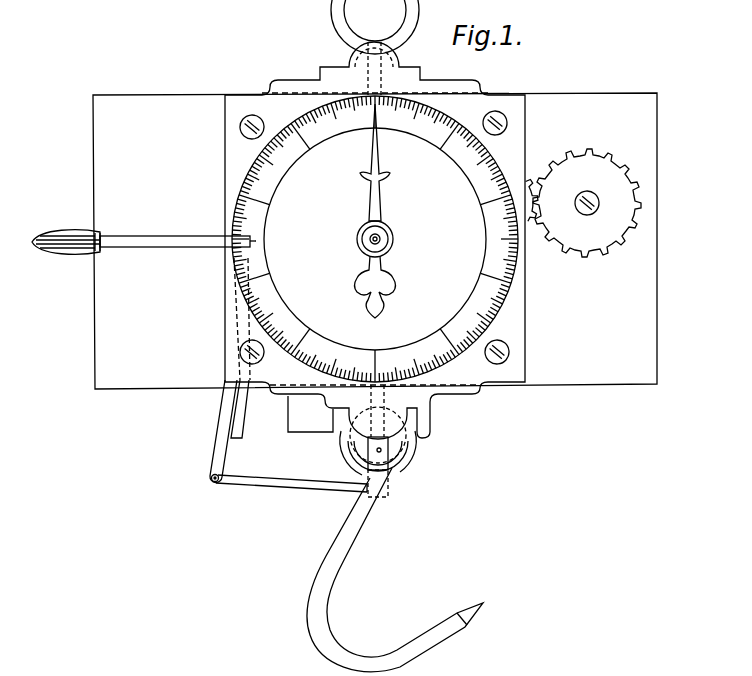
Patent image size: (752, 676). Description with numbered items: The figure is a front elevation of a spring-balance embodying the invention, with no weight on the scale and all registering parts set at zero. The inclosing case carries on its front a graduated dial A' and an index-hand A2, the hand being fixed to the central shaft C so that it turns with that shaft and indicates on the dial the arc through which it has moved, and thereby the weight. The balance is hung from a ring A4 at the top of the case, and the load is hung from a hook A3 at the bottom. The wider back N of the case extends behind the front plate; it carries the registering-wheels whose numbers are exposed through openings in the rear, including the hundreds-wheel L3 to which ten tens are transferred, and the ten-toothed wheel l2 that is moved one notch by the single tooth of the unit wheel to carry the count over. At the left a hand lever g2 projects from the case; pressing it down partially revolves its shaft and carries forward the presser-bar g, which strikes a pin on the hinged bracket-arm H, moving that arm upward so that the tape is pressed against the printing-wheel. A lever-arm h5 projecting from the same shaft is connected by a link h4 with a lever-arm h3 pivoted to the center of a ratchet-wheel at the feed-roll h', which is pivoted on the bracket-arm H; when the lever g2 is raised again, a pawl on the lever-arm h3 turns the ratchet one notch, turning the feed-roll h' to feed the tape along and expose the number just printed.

The back N is at (627, 391).
The ring A4 is at (340, 29).
The dial A' is at (383, 239).
The index-hand A2 is at (378, 199).
The shaft C is at (388, 239).
The hundreds-wheel L3 is at (587, 203).
The wheel l2 is at (531, 173).
The lever g2 is at (142, 243).
The presser-bar g is at (236, 422).
The lever-arm h5 is at (224, 431).
The link h4 is at (266, 486).
The bracket-arm H is at (296, 421).
The feed-roll h' is at (411, 441).
The lever-arm h3 is at (378, 461).
The hook A3 is at (346, 541).